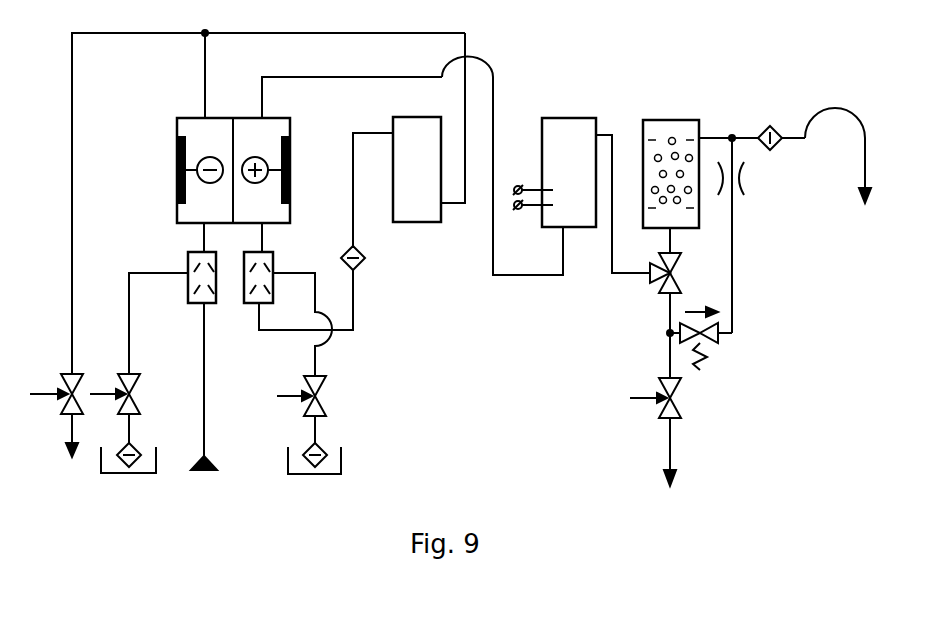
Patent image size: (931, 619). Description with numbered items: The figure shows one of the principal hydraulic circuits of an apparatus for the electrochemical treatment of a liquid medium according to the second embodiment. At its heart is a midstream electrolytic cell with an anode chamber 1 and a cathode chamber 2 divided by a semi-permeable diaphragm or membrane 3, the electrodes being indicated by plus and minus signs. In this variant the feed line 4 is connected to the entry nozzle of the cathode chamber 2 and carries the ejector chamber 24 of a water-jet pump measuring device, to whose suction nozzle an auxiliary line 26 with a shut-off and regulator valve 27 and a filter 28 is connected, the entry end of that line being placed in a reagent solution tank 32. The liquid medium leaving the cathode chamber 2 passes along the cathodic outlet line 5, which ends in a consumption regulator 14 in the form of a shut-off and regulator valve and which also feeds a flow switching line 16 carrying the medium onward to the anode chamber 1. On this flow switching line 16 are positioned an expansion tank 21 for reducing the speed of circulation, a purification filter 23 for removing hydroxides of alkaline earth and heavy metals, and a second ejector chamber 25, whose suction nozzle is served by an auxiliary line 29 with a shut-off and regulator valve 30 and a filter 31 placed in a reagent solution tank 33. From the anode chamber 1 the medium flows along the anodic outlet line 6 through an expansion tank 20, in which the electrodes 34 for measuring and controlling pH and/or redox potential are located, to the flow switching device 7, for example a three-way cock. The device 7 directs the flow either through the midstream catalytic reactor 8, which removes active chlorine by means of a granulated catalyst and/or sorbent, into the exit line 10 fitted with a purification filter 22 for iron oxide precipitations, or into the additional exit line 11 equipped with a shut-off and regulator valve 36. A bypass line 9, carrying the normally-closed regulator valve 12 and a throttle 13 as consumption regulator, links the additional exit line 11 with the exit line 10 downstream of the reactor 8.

The anode chamber 1 is at (258, 128).
The cathode chamber 2 is at (210, 210).
The diaphragm or membrane 3 is at (178, 127).
The feed line 4 is at (205, 450).
The cathodic outlet line 5 is at (175, 36).
The anodic outlet line 6 is at (494, 102).
The flow switching device 7 is at (672, 275).
The midstream catalytic reactor 8 is at (668, 130).
The bypass line 9 is at (735, 238).
The exit line 10 is at (850, 112).
The additional exit line 11 is at (670, 360).
The regulator valve 12 is at (718, 345).
The throttle 13 is at (746, 172).
The consumption regulator 14 is at (74, 374).
The flow switching line 16 is at (422, 34).
The expansion tank 20 is at (560, 140).
The expansion tank 21 is at (420, 222).
The purification filter 22 is at (772, 128).
The purification filter 23 is at (362, 262).
The ejector chamber 24 is at (188, 262).
The ejector chamber 25 is at (250, 304).
The auxiliary line 26 is at (128, 300).
The shut-off and regulator valve 27 is at (131, 375).
The filter 28 is at (132, 440).
The auxiliary line 29 is at (276, 272).
The shut-off and regulator valve 30 is at (320, 396).
The filter 31 is at (320, 448).
The reagent solution tank 32 is at (128, 474).
The reagent solution tank 33 is at (315, 475).
The electrodes 34 is at (518, 210).
The shut-off and regulator valve 36 is at (678, 398).